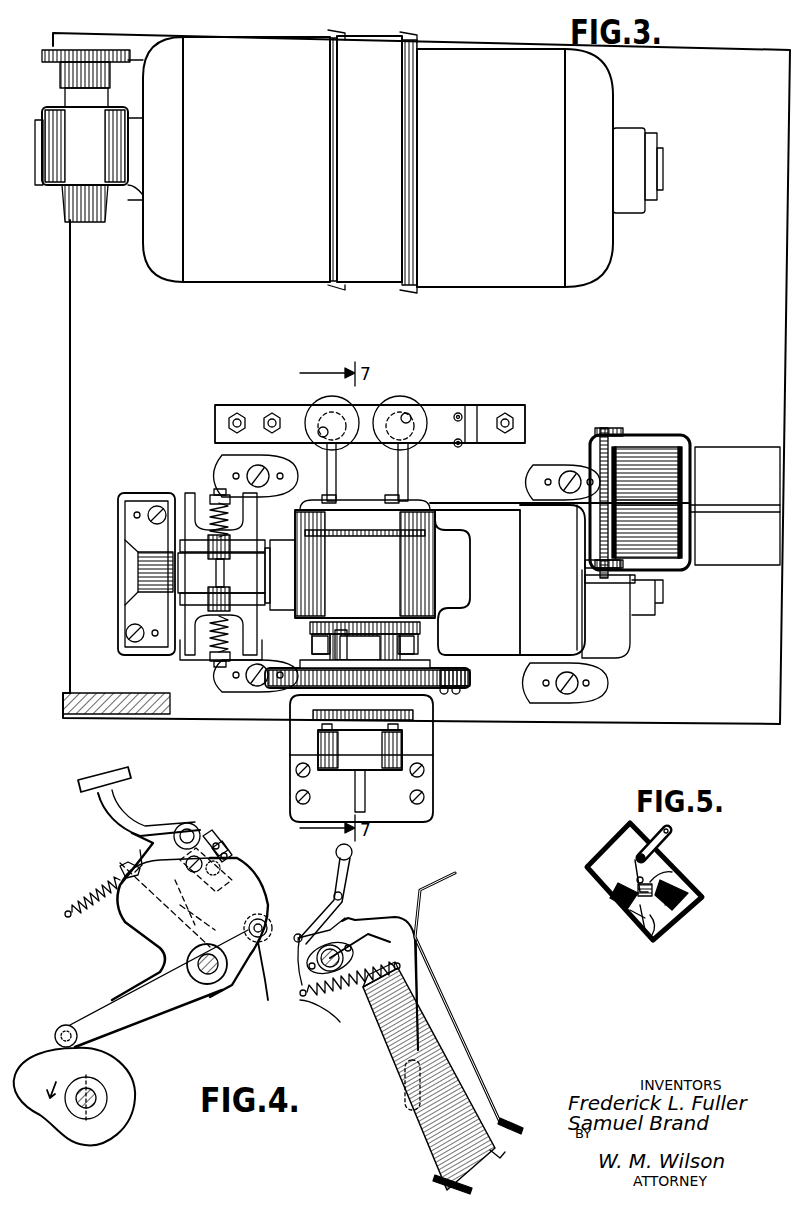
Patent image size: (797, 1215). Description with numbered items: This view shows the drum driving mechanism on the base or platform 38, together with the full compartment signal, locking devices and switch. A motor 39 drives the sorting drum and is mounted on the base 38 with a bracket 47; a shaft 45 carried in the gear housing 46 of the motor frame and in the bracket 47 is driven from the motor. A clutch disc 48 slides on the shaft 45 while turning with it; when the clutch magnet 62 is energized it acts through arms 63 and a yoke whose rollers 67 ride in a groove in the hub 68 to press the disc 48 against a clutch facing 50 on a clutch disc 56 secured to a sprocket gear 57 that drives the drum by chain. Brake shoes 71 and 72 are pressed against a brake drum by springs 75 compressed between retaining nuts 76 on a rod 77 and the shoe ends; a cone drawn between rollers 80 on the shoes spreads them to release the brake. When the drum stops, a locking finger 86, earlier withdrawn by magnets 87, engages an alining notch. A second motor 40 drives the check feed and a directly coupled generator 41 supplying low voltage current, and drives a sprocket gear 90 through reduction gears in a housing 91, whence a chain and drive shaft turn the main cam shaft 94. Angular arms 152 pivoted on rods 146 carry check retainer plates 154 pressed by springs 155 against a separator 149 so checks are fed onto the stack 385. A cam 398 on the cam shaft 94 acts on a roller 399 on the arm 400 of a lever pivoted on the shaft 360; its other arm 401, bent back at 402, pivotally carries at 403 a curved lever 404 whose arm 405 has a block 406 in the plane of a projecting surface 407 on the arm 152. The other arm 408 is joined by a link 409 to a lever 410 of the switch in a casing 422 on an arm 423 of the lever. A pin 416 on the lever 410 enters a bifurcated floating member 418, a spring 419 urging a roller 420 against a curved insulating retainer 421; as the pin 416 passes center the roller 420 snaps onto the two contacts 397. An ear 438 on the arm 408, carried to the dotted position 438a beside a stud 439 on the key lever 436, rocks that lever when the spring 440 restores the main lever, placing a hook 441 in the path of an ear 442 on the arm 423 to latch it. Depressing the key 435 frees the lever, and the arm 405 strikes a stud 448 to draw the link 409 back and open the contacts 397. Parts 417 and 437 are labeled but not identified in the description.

In FIG. 3, the base or platform 38 is at (70, 391).
In FIG. 3, the motor 39 is at (549, 581).
In FIG. 3, the motor 40 is at (272, 160).
In FIG. 3, the generator 41 is at (531, 162).
In FIG. 3, the shaft 45 is at (360, 640).
In FIG. 3, the gear housing 46 is at (345, 746).
In FIG. 3, the bracket 47 is at (420, 743).
In FIG. 3, the clutch disc 48 is at (440, 668).
In FIG. 3, the clutch facing 50 is at (462, 681).
In FIG. 3, the clutch disc 56 is at (458, 692).
In FIG. 3, the sprocket gear 57 is at (400, 715).
In FIG. 3, the clutch magnet 62 is at (325, 402).
In FIG. 3, the arms 63 is at (398, 478).
In FIG. 3, the rollers 67 is at (325, 640).
In FIG. 3, the hub 68 is at (345, 630).
In FIG. 3, the brake shoe 71 is at (186, 658).
In FIG. 3, the brake shoe 72 is at (188, 497).
In FIG. 3, the springs 75 is at (212, 505).
In FIG. 3, the retaining nuts 76 is at (218, 488).
In FIG. 3, the rod 77 is at (225, 578).
In FIG. 3, the rollers 80 is at (212, 560).
In FIG. 3, the locking finger 86 is at (510, 503).
In FIG. 3, the magnets 87 is at (682, 505).
In FIG. 3, the sprocket gear 90 is at (125, 50).
In FIG. 3, the housing 91 is at (89, 141).
In FIG. 4, the main cam shaft 94 is at (96, 1100).
In FIG. 4, the rods 146 is at (310, 975).
In FIG. 4, the separator 149 is at (466, 988).
In FIG. 4, the angular arms 152 is at (418, 1000).
In FIG. 4, the check retainer or clamping plate 154 is at (418, 1085).
In FIG. 4, the springs 155 is at (310, 1020).
In FIG. 4, the shaft 360 is at (220, 985).
In FIG. 4, the stack 385 is at (366, 1052).
In FIG. 5, the contacts 397 is at (665, 935).
In FIG. 4, the cam 398 is at (38, 1102).
In FIG. 4, the roller 399 is at (72, 1024).
In FIG. 4, the arm 400 is at (112, 998).
In FIG. 4, the arm 401 is at (258, 892).
In FIG. 4, the bent back portion 402 is at (252, 876).
In FIG. 4, the pivot 403 is at (270, 920).
In FIG. 4, the curved lever 404 is at (278, 940).
In FIG. 4, the arm 405 is at (350, 872).
In FIG. 4, the block 406 is at (342, 898).
In FIG. 4, the projecting surface 407 is at (360, 918).
In FIG. 4, the arm 408 is at (205, 900).
In FIG. 4, the link 409 is at (192, 878).
In FIG. 5, the link 409 is at (670, 842).
In FIG. 5, the lever 410 is at (630, 873).
In FIG. 5, the pin 416 is at (635, 890).
In FIG. 5, the spring 417 is at (640, 922).
In FIG. 5, the bifurcated floating member 418 is at (672, 872).
In FIG. 5, the spring 419 is at (648, 935).
In FIG. 5, the roller 420 is at (688, 880).
In FIG. 5, the curved insulating retainer 421 is at (684, 908).
In FIG. 5, the casing 422 is at (634, 912).
In FIG. 4, the arm 423 is at (148, 930).
In FIG. 4, the key 435 is at (104, 775).
In FIG. 4, the key lever 436 is at (140, 820).
In FIG. 4, the roller 437 is at (195, 830).
In FIG. 4, the ear 438 is at (230, 853).
In FIG. 4, the dotted line position of ear 438a is at (222, 846).
In FIG. 4, the stud 439 is at (232, 860).
In FIG. 4, the spring 440 is at (92, 896).
In FIG. 4, the hook 441 is at (140, 850).
In FIG. 4, the ear 442 is at (122, 868).
In FIG. 4, the stud 448 is at (352, 852).